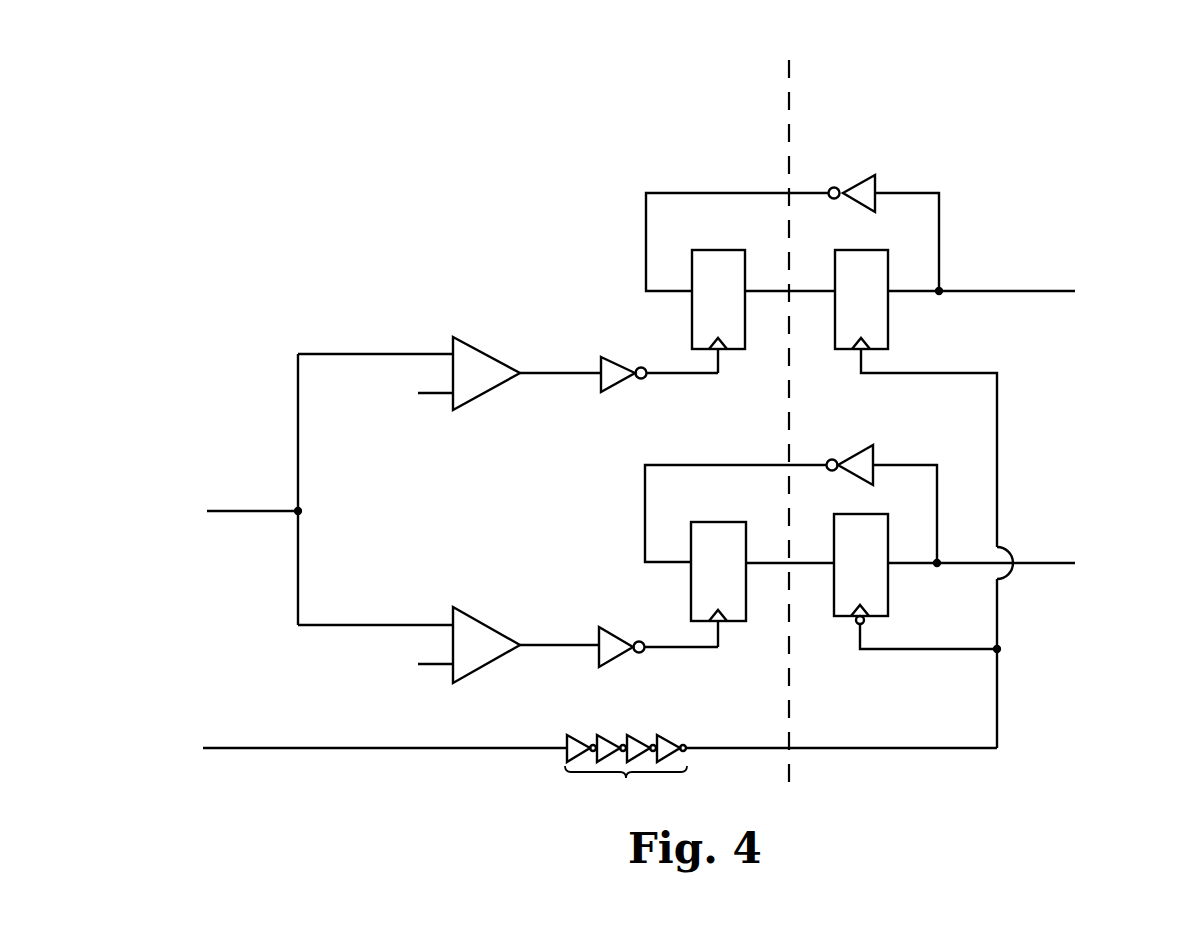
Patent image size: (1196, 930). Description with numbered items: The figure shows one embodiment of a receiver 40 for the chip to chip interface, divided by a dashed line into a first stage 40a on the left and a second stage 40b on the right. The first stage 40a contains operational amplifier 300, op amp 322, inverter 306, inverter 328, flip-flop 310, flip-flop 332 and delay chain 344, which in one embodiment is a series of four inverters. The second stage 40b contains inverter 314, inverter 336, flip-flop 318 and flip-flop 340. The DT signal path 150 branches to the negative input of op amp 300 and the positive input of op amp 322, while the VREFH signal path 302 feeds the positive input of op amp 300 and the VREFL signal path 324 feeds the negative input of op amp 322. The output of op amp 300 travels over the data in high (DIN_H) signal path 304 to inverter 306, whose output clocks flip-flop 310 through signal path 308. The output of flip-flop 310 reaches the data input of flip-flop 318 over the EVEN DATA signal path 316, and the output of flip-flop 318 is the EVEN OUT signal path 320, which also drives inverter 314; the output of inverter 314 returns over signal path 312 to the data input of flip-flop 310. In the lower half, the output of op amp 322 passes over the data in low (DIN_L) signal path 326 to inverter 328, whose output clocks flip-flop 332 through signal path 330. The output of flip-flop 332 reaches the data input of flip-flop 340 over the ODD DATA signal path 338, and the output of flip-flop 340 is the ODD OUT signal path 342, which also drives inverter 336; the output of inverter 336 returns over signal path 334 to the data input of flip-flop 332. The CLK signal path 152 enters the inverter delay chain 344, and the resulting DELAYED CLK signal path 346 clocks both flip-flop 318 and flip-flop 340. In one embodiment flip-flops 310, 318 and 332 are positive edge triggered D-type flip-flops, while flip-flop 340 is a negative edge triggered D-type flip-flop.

The receiver 40 is at (848, 53).
The first stage 40a is at (315, 238).
The second stage 40b is at (1090, 196).
The DT signal path 150 is at (238, 511).
The CLK signal path 152 is at (262, 748).
The operational amplifier 300 is at (466, 342).
The VREFH signal path 302 is at (441, 395).
The data in high (DIN_H) signal path 304 is at (561, 375).
The inverter 306 is at (616, 360).
The signal path 308 is at (666, 375).
The flip-flop 310 is at (736, 351).
The signal path 312 is at (646, 236).
The inverter 314 is at (851, 178).
The EVEN DATA signal path 316 is at (783, 293).
The flip-flop 318 is at (889, 337).
The EVEN OUT signal path 320 is at (994, 291).
The operational amplifier 322 is at (468, 610).
The VREFL signal path 324 is at (439, 668).
The data in low (DIN_L) signal path 326 is at (566, 648).
The inverter 328 is at (616, 632).
The signal path 330 is at (678, 650).
The flip-flop 332 is at (735, 624).
The signal path 334 is at (645, 507).
The inverter 336 is at (850, 454).
The ODD DATA signal path 338 is at (786, 561).
The flip-flop 340 is at (889, 590).
The ODD OUT signal path 342 is at (1040, 565).
The delay chain 344 is at (626, 774).
The DELAYED CLK signal path 346 is at (990, 755).